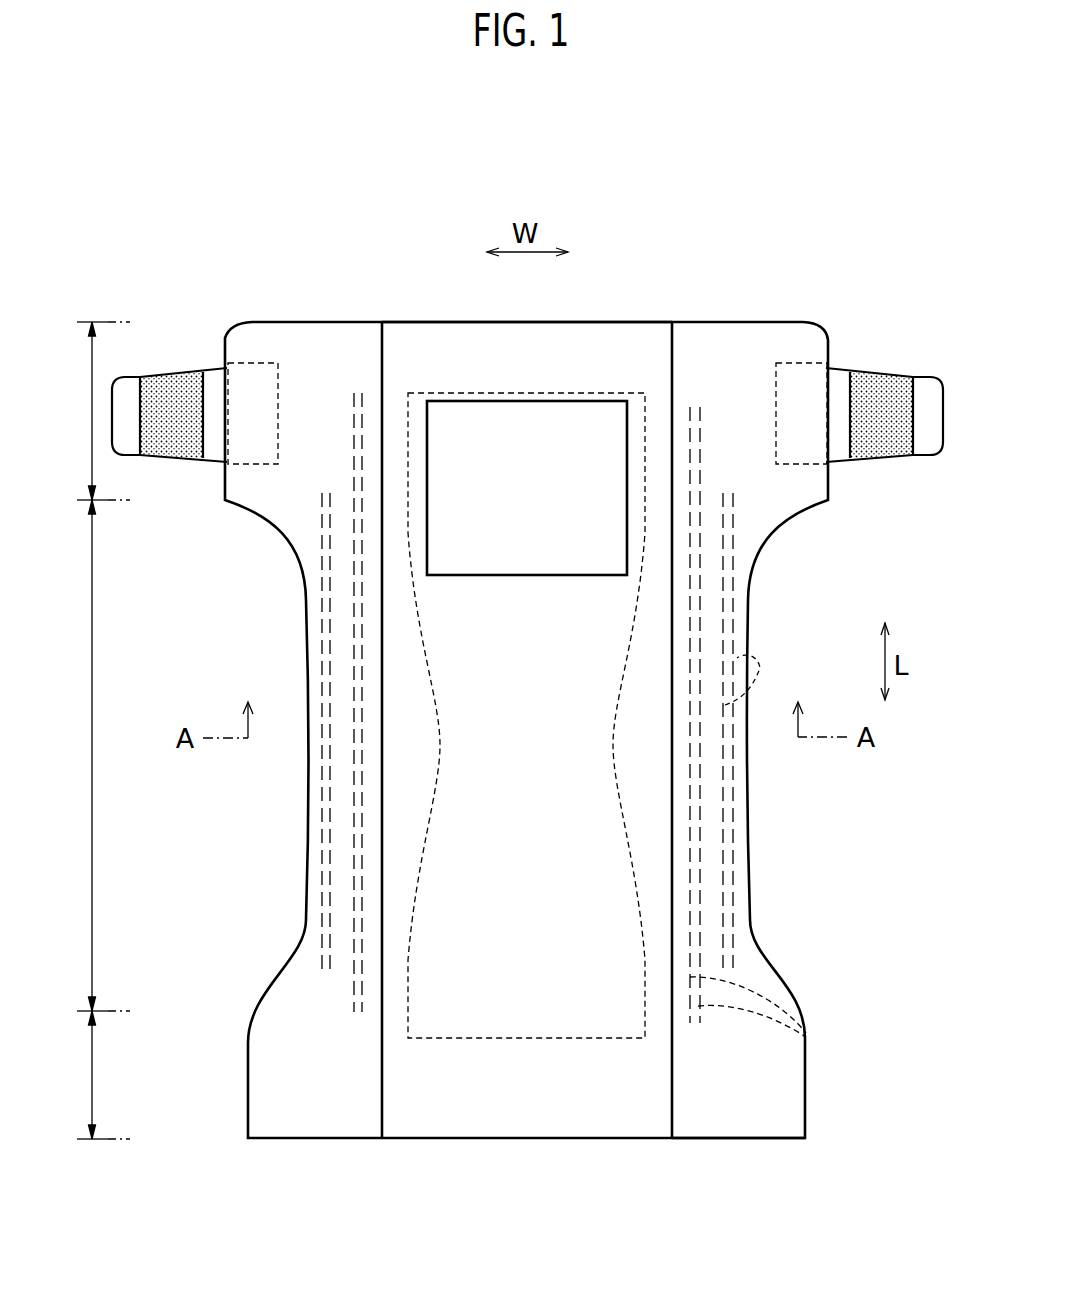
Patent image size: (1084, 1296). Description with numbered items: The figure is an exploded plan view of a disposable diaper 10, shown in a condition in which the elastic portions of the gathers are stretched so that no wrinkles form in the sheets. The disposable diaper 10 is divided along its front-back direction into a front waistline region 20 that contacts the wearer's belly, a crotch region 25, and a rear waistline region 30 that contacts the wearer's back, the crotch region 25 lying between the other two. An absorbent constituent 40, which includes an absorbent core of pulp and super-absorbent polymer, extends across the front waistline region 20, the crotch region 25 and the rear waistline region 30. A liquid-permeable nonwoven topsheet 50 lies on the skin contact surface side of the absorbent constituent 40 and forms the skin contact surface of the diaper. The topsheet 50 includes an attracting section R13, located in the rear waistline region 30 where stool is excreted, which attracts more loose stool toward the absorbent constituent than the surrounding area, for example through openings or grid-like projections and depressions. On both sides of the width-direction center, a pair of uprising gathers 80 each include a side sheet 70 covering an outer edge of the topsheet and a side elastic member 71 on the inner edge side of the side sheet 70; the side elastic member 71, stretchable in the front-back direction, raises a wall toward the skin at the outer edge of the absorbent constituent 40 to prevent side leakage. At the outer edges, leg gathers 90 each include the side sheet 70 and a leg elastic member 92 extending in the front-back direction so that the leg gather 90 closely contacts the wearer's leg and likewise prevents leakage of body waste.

The disposable diaper 10 is at (811, 278).
The front waistline region 20 is at (91, 1075).
The crotch region 25 is at (91, 755).
The rear waistline region 30 is at (91, 411).
The absorbent constituent 40 is at (617, 778).
The topsheet 50 is at (618, 338).
The side sheet 70 is at (758, 1130).
The side elastic member 71 is at (806, 1035).
The uprising gather 80 is at (385, 1112).
The leg gather 90 is at (757, 622).
The leg elastic member 92 is at (763, 667).
The attracting section R13 is at (453, 401).